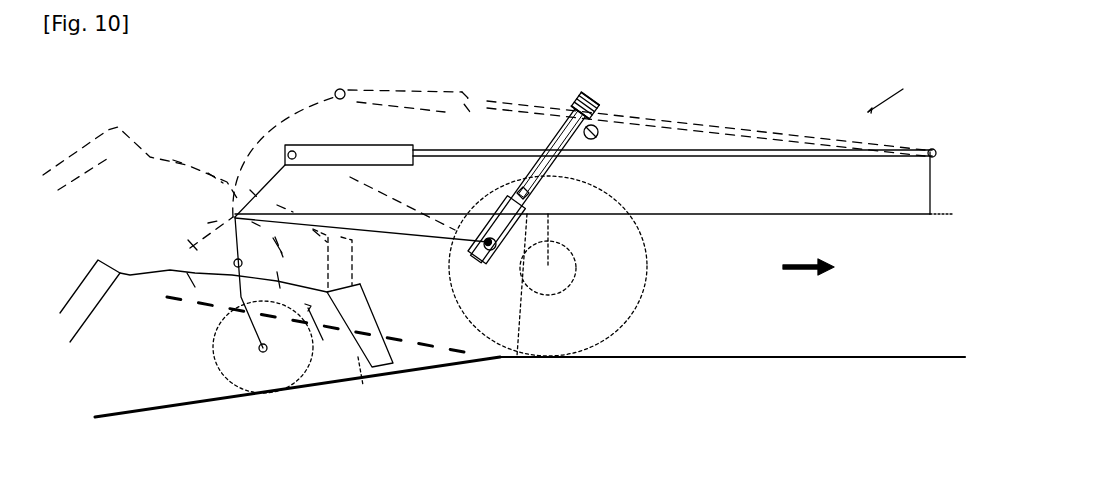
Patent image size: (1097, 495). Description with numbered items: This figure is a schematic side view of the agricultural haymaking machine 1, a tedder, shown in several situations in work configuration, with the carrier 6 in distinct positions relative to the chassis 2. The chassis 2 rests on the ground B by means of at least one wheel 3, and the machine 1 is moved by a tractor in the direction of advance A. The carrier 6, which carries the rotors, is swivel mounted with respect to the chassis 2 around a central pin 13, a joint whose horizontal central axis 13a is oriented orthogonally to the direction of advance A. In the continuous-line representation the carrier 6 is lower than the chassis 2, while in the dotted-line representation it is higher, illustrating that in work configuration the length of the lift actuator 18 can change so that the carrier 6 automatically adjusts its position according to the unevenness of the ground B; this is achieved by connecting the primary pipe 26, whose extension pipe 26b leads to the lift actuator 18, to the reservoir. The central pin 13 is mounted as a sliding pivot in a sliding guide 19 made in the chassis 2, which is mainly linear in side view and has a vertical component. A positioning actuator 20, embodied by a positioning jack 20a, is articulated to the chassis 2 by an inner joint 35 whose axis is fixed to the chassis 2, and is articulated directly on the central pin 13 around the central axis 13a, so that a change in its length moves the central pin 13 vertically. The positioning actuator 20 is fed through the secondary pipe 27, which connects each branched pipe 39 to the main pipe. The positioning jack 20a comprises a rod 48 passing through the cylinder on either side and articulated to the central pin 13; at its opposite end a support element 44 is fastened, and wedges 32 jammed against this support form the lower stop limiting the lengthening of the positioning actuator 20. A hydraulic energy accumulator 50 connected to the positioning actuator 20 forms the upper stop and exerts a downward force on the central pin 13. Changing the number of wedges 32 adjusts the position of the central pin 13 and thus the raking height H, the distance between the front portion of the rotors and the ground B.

The agricultural haymaking machine 1 is at (890, 95).
The chassis 2 is at (670, 217).
The wheel 3 is at (625, 280).
The carrier 6 is at (364, 184).
The central pin 13 is at (399, 298).
The central axis 13a is at (486, 244).
The lift actuator 18 is at (372, 153).
The sliding guide 19 is at (489, 247).
The positioning actuator 20 is at (572, 186).
The positioning jack 20a is at (552, 162).
The primary pipe 26 is at (584, 138).
The extension pipe 26b is at (460, 90).
The secondary pipe 27 is at (512, 305).
The branched pipe 39 is at (517, 358).
The wedges 32 is at (574, 103).
The inner joint 35 is at (529, 195).
The support element 44 is at (593, 100).
The rod 48 is at (592, 121).
The hydraulic energy accumulator 50 is at (598, 134).
The direction of advance A is at (806, 274).
The ground B is at (848, 355).
The raking height H is at (323, 328).